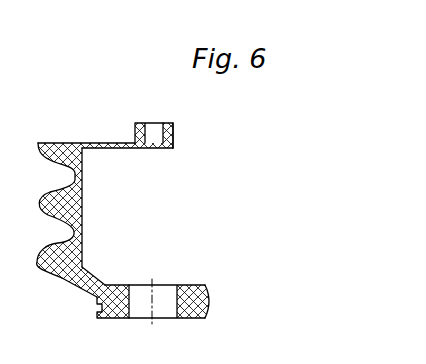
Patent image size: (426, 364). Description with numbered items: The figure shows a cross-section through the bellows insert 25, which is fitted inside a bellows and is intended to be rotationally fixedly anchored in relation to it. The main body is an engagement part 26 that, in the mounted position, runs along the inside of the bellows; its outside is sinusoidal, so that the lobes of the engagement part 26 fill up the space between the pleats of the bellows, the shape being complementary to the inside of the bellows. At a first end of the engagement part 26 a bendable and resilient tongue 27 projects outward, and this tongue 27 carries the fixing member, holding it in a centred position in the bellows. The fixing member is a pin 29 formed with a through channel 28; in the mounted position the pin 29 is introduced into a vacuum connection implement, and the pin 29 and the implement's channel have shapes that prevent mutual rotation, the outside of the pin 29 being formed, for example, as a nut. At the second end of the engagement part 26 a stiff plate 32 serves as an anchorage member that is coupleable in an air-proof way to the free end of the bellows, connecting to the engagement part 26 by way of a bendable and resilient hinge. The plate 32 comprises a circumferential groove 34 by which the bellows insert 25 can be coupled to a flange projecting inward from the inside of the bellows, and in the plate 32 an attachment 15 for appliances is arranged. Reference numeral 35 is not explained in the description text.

The attachment for appliances 15 is at (163, 303).
The bellows insert 25 is at (240, 208).
The engagement part 26 is at (82, 205).
The tongue 27 is at (102, 143).
The through channel 28 is at (155, 123).
The pin 29 is at (173, 133).
The stiff plate 32 is at (193, 285).
The circumferential groove 34 is at (212, 303).
The connecting arm 35 is at (90, 274).